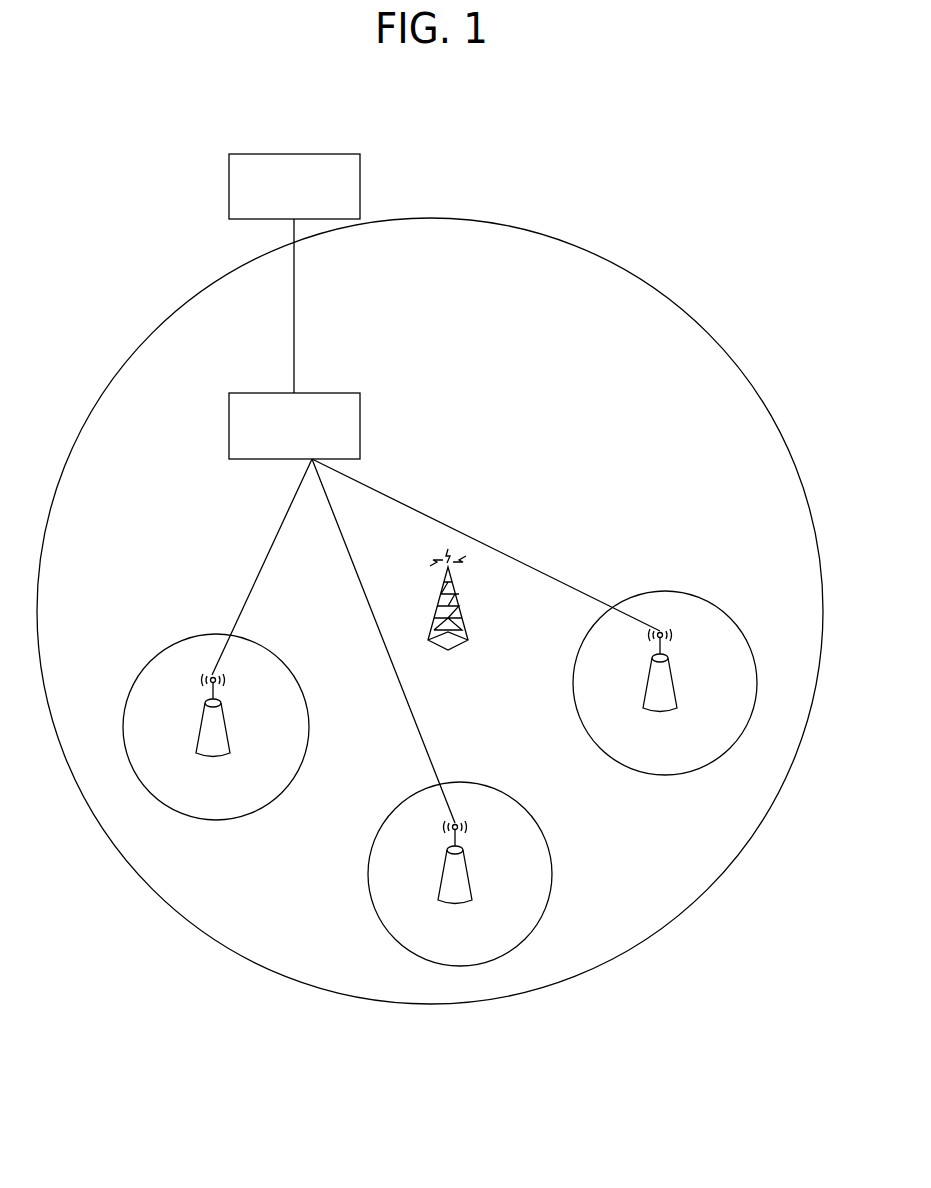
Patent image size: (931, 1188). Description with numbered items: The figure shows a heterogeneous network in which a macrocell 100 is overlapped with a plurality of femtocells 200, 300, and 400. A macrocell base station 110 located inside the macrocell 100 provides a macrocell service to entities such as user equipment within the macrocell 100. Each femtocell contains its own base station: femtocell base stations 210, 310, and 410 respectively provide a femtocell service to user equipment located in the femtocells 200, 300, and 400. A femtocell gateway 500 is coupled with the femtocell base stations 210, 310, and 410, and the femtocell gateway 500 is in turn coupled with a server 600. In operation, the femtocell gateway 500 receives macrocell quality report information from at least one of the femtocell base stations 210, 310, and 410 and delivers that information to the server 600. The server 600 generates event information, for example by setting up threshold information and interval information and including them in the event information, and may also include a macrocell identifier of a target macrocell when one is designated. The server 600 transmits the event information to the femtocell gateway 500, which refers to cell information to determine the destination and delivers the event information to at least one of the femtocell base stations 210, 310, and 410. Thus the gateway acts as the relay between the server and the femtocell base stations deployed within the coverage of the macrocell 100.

The macrocell 100 is at (647, 285).
The macrocell base station 110 is at (460, 603).
The femtocell 200 is at (195, 634).
The femtocell base station 210 is at (223, 715).
The femtocell 300 is at (542, 832).
The femtocell base station 310 is at (468, 860).
The femtocell 400 is at (718, 603).
The femtocell base station 410 is at (675, 669).
The femtocell gateway 500 is at (337, 393).
The server 600 is at (318, 153).